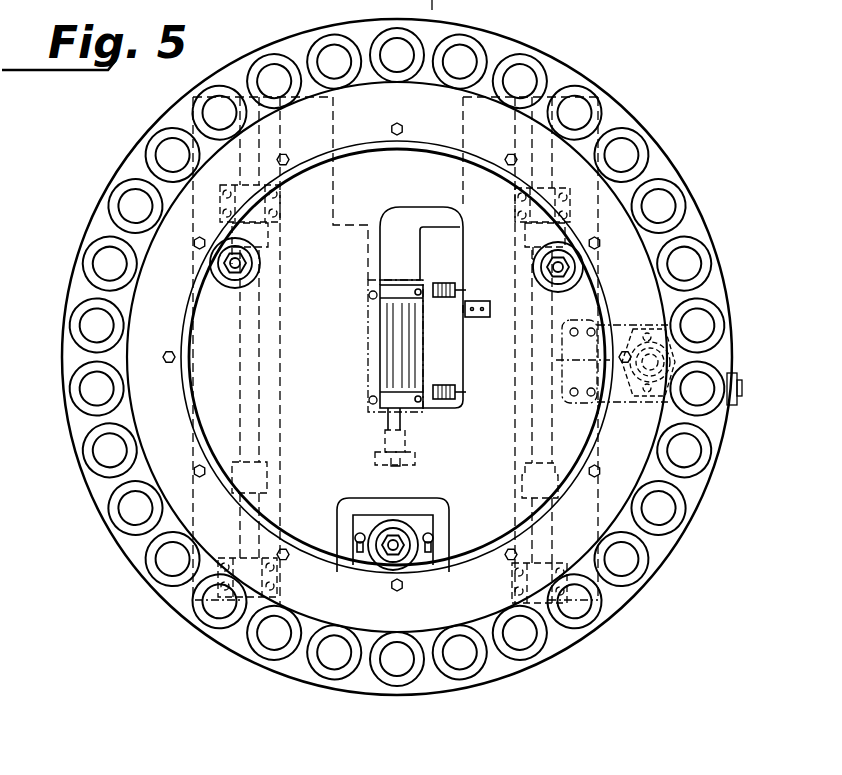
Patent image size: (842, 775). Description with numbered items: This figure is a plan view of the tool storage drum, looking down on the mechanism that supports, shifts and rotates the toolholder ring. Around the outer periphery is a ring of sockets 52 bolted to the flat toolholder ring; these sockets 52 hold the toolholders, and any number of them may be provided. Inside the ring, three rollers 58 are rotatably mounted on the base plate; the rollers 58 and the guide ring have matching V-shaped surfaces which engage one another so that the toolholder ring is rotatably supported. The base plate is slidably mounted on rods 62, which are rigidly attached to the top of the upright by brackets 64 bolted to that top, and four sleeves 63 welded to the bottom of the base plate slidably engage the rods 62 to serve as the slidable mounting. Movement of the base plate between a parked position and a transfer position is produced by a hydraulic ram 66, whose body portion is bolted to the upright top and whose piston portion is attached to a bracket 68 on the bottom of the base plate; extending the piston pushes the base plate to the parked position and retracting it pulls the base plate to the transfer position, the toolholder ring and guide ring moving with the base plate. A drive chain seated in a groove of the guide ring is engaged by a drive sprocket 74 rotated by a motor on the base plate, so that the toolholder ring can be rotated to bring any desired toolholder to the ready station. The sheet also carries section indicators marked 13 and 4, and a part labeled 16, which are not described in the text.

The sockets 52 is at (567, 100).
The rollers 58 is at (238, 289).
The rods 62 is at (262, 342).
The sleeves 63 is at (258, 234).
The brackets 64 is at (259, 207).
The hydraulic ram 66 is at (398, 375).
The bracket 68 is at (415, 462).
The drive sprocket 74 is at (630, 403).
The fitting 16 is at (636, 328).
The section line 13 is at (576, 380).
The section line 4 is at (368, 717).